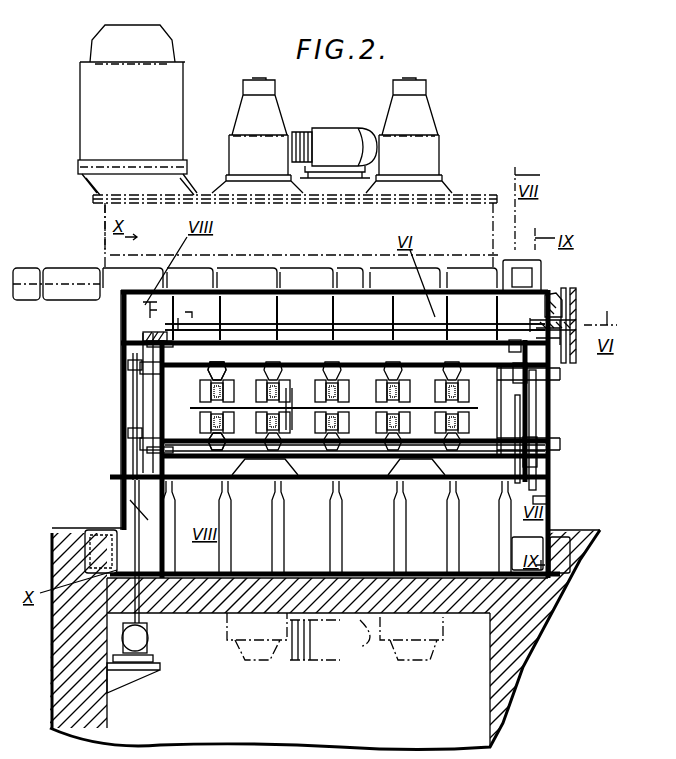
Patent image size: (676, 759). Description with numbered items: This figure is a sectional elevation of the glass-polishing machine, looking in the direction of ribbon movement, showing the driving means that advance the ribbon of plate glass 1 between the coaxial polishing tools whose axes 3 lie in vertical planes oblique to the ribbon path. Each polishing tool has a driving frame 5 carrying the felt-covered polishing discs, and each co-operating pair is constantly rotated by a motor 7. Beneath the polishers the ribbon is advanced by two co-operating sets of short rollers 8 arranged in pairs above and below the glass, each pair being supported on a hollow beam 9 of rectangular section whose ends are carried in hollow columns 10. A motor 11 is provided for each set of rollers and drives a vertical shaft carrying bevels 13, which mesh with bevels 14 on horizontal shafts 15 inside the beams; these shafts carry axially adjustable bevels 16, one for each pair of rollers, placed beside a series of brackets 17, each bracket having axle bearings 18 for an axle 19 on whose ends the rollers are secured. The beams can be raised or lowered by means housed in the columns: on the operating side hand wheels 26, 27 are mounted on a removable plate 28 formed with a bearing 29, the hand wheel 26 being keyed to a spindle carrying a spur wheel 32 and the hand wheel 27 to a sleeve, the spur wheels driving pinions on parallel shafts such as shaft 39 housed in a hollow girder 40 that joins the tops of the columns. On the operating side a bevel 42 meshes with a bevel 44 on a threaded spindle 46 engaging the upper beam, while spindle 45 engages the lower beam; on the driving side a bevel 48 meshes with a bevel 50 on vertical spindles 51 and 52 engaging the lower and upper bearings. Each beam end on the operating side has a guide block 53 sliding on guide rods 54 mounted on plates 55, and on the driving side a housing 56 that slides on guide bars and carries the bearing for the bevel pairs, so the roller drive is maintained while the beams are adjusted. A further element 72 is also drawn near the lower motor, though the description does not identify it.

The ribbon of plate glass 1 is at (470, 408).
The axes of the polishing tools 3 is at (255, 348).
The driving frame 5 is at (268, 470).
The motor 7 is at (169, 36).
The short rollers 8 is at (295, 392).
The hollow beams 9 is at (427, 357).
The hollow columns 10 is at (123, 405).
The motor 11 is at (137, 640).
The bevels 13 is at (143, 368).
The bevels 14 is at (143, 342).
The horizontal shafts 15 is at (198, 372).
The bevels 16 is at (220, 368).
The brackets 17 is at (268, 392).
The axle bearings 18 is at (343, 390).
The axle 19 is at (400, 390).
The hand wheel 26 is at (577, 345).
The hand wheel 27 is at (570, 292).
The removable plate 28 is at (557, 295).
The bearing 29 is at (610, 321).
The spur wheel 32 is at (527, 335).
The shaft 39 is at (367, 332).
The hollow girder 40 is at (320, 293).
The bevel 42 is at (533, 330).
The bevel 44 is at (548, 335).
The spindle 45 is at (517, 415).
The spindle 46 is at (521, 342).
The bevel 48 is at (170, 326).
The bevel 50 is at (147, 335).
The vertical spindle 51 is at (150, 415).
The vertical spindle 52 is at (143, 393).
The guide block 53 is at (520, 337).
The guide rods 54 is at (532, 423).
The plates 55 is at (545, 500).
The housing 56 is at (138, 360).
The pipe 72 is at (128, 557).